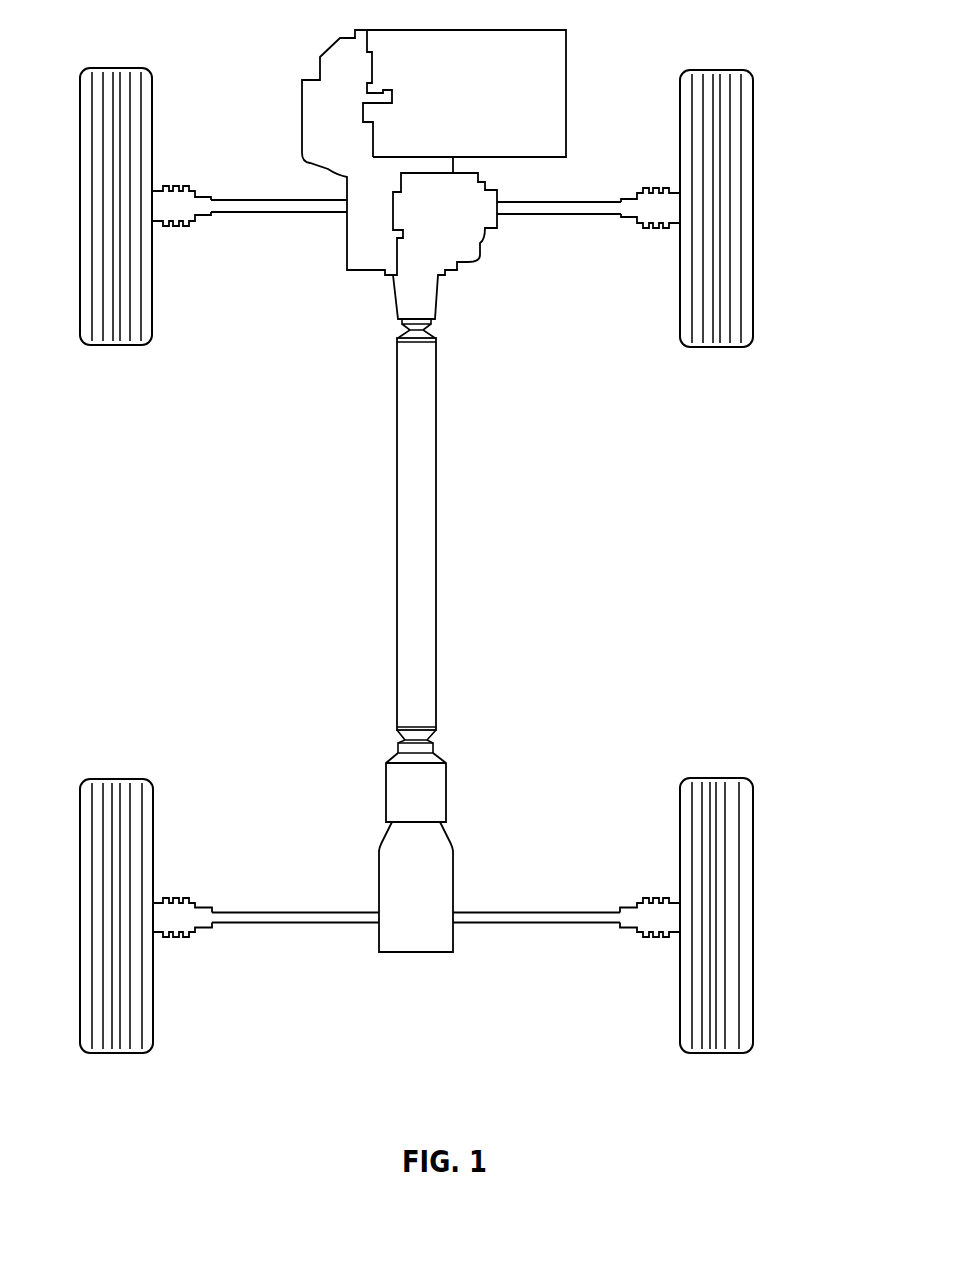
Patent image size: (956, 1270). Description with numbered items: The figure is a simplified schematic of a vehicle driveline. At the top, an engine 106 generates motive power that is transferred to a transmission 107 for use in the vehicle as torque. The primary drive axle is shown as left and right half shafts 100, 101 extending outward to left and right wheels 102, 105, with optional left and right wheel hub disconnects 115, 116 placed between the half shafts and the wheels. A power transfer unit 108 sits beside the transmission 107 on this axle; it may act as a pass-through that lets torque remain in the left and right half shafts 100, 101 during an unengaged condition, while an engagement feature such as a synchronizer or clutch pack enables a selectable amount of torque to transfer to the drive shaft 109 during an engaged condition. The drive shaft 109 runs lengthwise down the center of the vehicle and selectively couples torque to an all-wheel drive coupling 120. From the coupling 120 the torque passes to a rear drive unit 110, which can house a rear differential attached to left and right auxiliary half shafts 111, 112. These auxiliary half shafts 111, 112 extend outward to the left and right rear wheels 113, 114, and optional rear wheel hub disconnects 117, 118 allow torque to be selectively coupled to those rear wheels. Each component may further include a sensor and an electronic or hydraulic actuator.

The left half shaft 100 is at (233, 213).
The right half shaft 101 is at (605, 215).
The left wheel 102 is at (133, 346).
The right wheel 105 is at (735, 349).
The engine 106 is at (486, 108).
The transmission 107 is at (357, 147).
The power transfer unit 108 is at (466, 232).
The drive shaft 109 is at (436, 490).
The rear drive unit 110 is at (416, 938).
The left auxiliary half shaft 111 is at (277, 924).
The right auxiliary half shaft 112 is at (563, 924).
The left rear wheel 113 is at (133, 1054).
The right rear wheel 114 is at (733, 1055).
The left wheel hub disconnect 115 is at (165, 227).
The right wheel hub disconnect 116 is at (663, 229).
The left rear wheel hub disconnect 117 is at (172, 939).
The right rear wheel hub disconnect 118 is at (665, 940).
The all-wheel drive coupling 120 is at (447, 793).